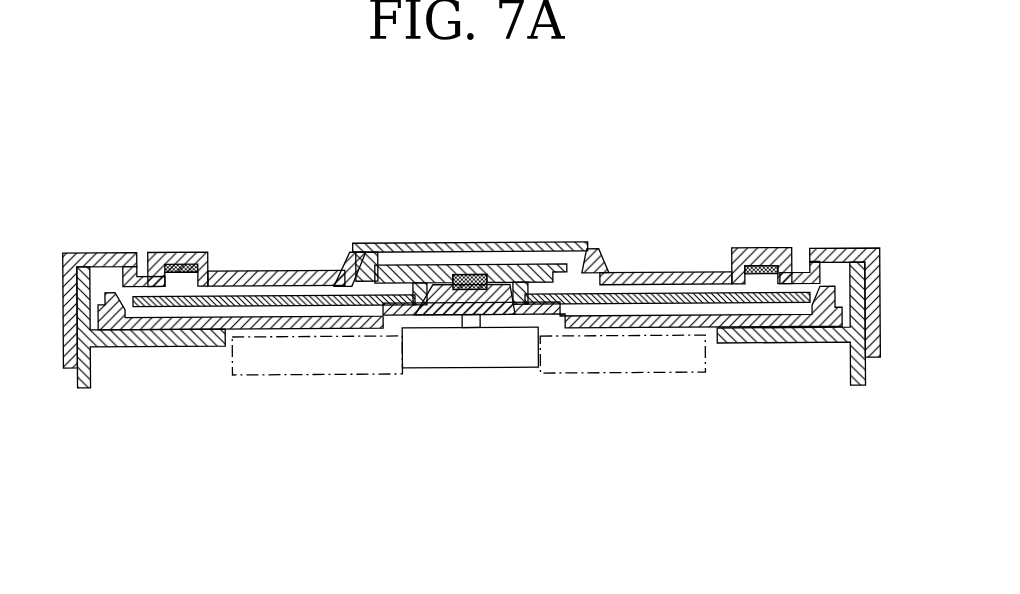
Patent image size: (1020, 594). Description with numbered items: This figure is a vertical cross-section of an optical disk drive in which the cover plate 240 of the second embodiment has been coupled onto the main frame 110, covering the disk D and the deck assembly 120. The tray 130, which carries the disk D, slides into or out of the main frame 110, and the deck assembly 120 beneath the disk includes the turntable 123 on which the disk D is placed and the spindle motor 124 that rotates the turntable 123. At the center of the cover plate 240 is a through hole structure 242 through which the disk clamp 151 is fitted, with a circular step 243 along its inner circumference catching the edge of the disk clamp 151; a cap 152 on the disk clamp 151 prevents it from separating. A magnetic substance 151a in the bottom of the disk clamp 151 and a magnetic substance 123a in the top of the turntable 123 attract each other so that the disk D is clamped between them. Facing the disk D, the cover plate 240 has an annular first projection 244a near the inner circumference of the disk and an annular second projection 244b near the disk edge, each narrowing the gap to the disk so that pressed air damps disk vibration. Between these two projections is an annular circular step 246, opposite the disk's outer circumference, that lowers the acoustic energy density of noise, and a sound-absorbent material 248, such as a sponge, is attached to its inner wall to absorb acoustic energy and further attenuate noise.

The cover plate 240 is at (87, 254).
The first projection 244a is at (279, 274).
The second projection 244b is at (133, 280).
The circular step 246 is at (186, 286).
The sound-absorbent material 248 is at (178, 266).
The through hole structure 242 is at (360, 256).
The circular step 243 is at (386, 268).
The disk clamp 151 is at (452, 267).
The magnetic substance 151a is at (489, 277).
The cap 152 is at (558, 247).
The disk D is at (630, 299).
The main frame 110 is at (137, 341).
The tray 130 is at (198, 330).
The turntable 123 is at (443, 310).
The magnetic substance 123a is at (469, 292).
The spindle motor 124 is at (521, 354).
The deck assembly 120 is at (622, 382).